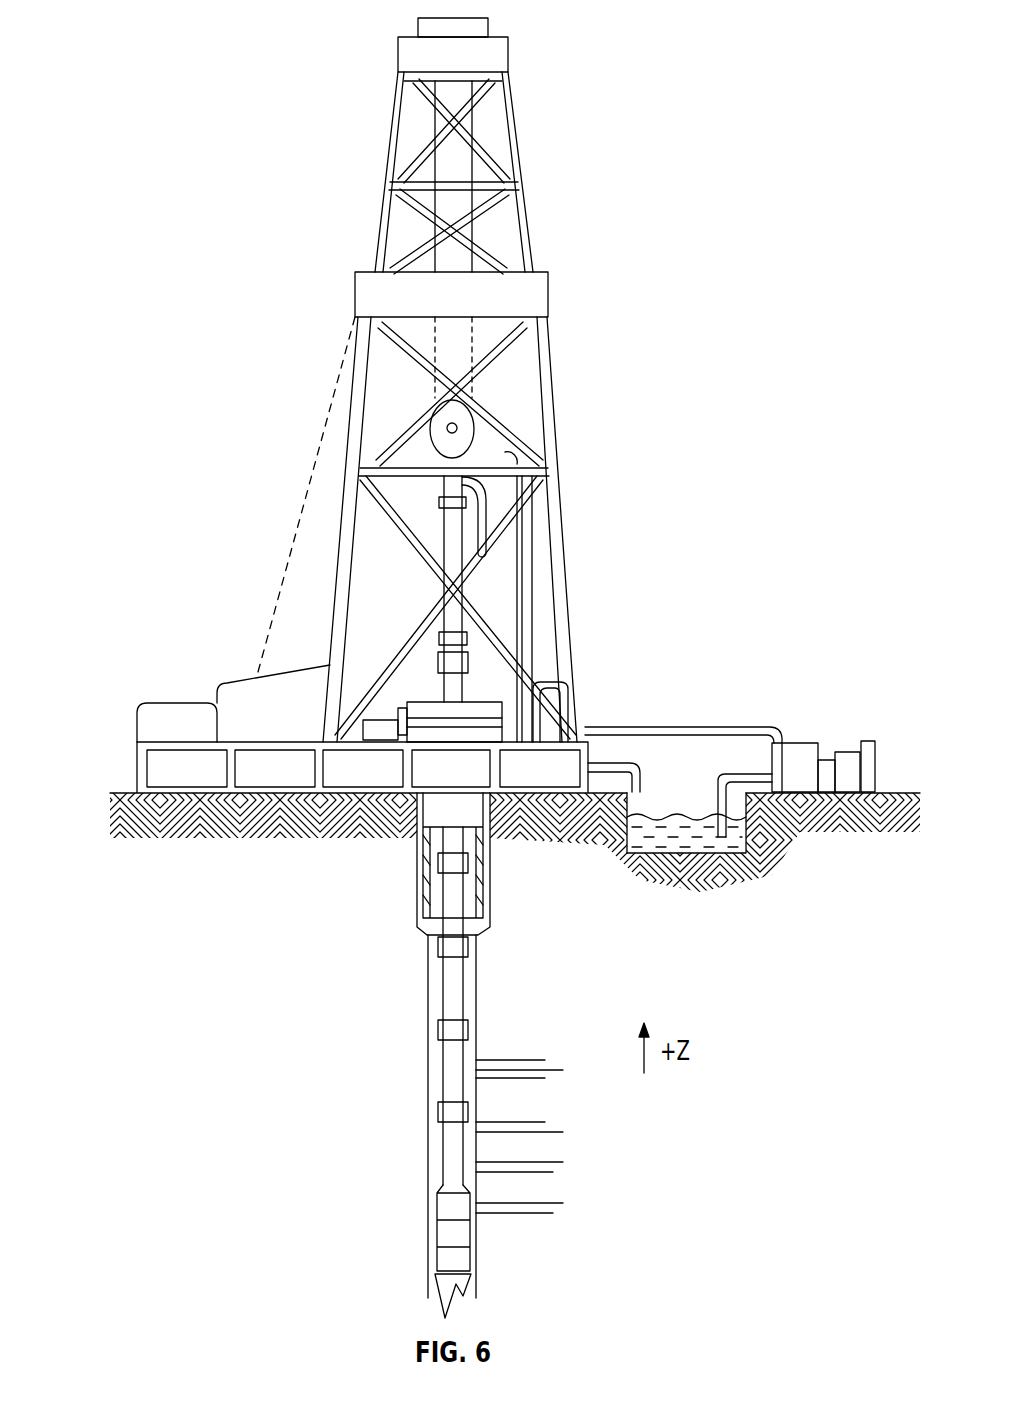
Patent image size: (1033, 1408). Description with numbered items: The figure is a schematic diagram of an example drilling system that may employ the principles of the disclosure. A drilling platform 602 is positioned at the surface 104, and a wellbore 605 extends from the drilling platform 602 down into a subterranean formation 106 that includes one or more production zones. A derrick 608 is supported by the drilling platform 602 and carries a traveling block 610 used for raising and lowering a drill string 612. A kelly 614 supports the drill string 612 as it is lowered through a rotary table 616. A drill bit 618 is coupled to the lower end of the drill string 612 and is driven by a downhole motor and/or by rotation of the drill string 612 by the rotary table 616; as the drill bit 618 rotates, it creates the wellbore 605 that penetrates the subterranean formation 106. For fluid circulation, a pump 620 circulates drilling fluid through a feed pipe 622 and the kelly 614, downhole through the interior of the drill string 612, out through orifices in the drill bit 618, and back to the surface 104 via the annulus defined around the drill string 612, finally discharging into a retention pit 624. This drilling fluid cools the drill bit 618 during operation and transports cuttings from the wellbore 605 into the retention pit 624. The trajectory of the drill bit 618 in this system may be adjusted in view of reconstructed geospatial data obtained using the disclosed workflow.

The derrick 608 is at (516, 143).
The traveling block 610 is at (466, 427).
The kelly 614 is at (450, 543).
The rotary table 616 is at (487, 700).
The drilling platform 602 is at (137, 755).
The feed pipe 622 is at (705, 727).
The pump 620 is at (800, 748).
The retention pit 624 is at (720, 880).
The surface 104 is at (881, 793).
The drill string 612 is at (458, 993).
The wellbore 605 is at (478, 1020).
The subterranean formation 106 is at (570, 1058).
The drill bit 618 is at (474, 1270).